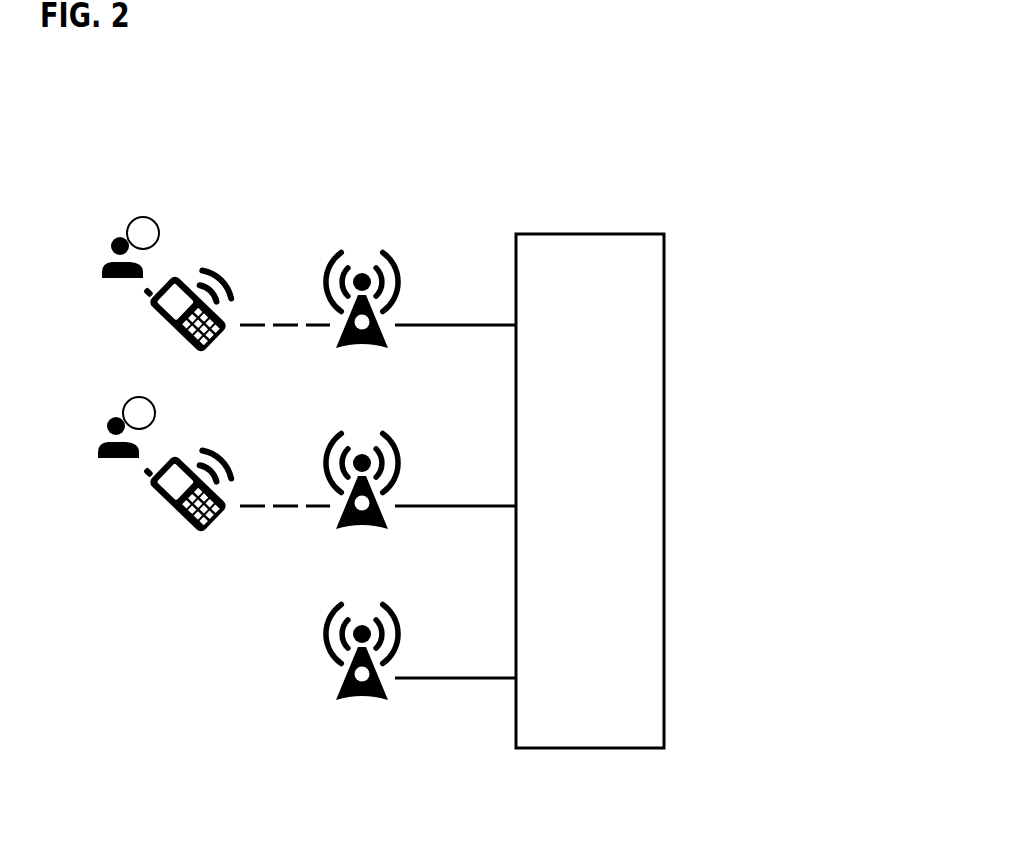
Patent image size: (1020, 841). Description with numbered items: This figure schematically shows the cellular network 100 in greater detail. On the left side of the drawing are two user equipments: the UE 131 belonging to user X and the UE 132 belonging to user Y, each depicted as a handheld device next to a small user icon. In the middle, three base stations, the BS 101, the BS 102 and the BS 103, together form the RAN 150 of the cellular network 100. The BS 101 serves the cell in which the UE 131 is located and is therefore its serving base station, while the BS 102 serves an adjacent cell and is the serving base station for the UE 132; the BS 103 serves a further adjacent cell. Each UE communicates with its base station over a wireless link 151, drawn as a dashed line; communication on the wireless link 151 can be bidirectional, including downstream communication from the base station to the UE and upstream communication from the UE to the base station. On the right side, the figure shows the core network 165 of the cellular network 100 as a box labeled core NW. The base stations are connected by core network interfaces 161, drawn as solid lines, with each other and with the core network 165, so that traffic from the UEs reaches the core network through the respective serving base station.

The cellular network 100 is at (772, 93).
The RAN 150 is at (396, 213).
The BS 101 is at (323, 263).
The BS 102 is at (323, 444).
The BS 103 is at (323, 614).
The UE 131 is at (143, 302).
The UE 132 is at (143, 482).
The wireless link 151 is at (283, 328).
The core network interface 161 is at (451, 328).
The core network 165 is at (648, 750).